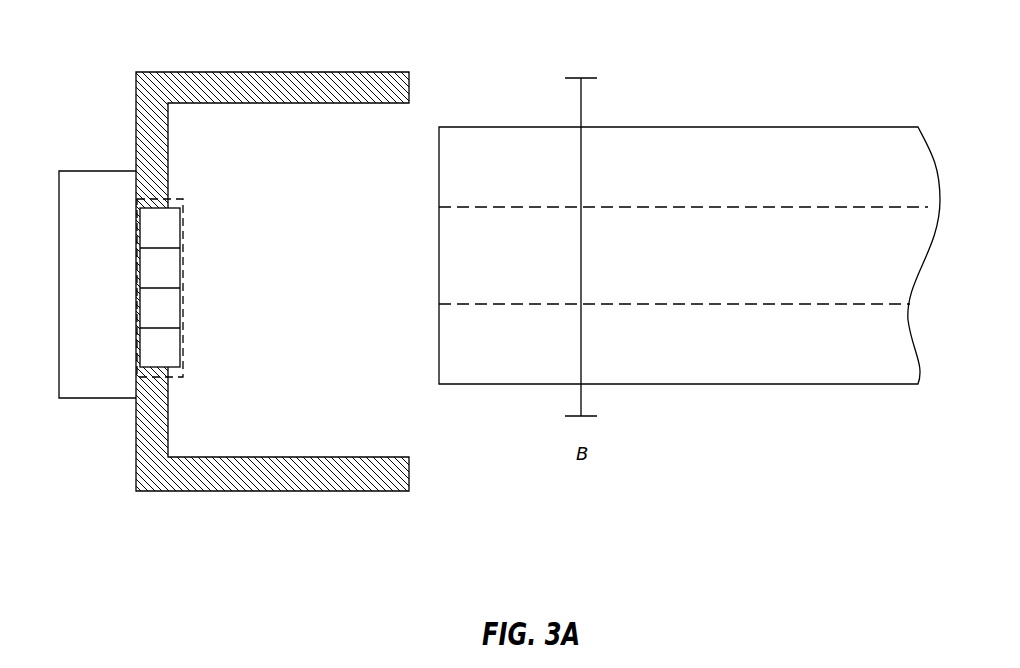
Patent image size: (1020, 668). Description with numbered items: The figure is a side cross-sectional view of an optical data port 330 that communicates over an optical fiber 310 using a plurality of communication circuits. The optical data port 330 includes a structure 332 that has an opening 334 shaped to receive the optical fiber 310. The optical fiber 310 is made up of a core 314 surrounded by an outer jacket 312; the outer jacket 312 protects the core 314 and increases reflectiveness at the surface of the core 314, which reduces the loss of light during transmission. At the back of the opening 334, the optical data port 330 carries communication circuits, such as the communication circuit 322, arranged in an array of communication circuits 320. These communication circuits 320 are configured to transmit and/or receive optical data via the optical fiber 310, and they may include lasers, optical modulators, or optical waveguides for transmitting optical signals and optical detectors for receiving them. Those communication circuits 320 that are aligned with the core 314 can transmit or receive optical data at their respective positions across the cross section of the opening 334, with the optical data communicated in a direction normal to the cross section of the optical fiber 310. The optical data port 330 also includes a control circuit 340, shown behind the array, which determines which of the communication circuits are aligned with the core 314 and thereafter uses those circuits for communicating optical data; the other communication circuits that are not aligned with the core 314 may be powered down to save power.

The optical fiber 310 is at (791, 108).
The outer jacket 312 is at (462, 172).
The core 314 is at (462, 253).
The array of communication circuits 320 is at (178, 377).
The communication circuit 322 is at (170, 311).
The optical data port 330 is at (415, 518).
The structure 332 is at (409, 80).
The opening 334 is at (406, 421).
The control circuit 340 is at (88, 400).